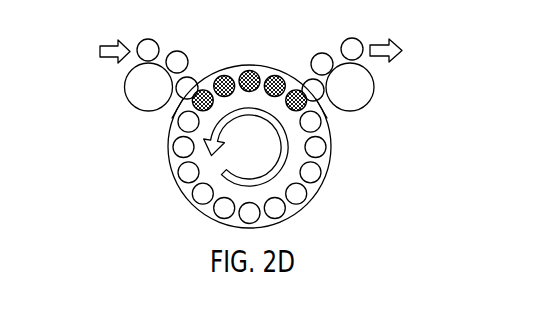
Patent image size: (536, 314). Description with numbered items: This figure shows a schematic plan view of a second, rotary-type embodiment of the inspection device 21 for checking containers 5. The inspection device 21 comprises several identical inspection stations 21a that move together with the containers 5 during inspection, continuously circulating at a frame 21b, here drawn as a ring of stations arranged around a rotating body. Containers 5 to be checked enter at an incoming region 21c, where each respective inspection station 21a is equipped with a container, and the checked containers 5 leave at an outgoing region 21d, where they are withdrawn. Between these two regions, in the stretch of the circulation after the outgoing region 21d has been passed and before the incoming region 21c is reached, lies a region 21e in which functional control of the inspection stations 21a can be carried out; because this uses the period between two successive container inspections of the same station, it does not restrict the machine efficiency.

The container 5 is at (151, 39).
The inspection device 21 is at (172, 189).
The inspection station 21a is at (260, 64).
The frame 21b is at (323, 186).
The incoming region 21c is at (169, 98).
The outgoing region 21d is at (357, 98).
The functional control region 21e is at (218, 59).